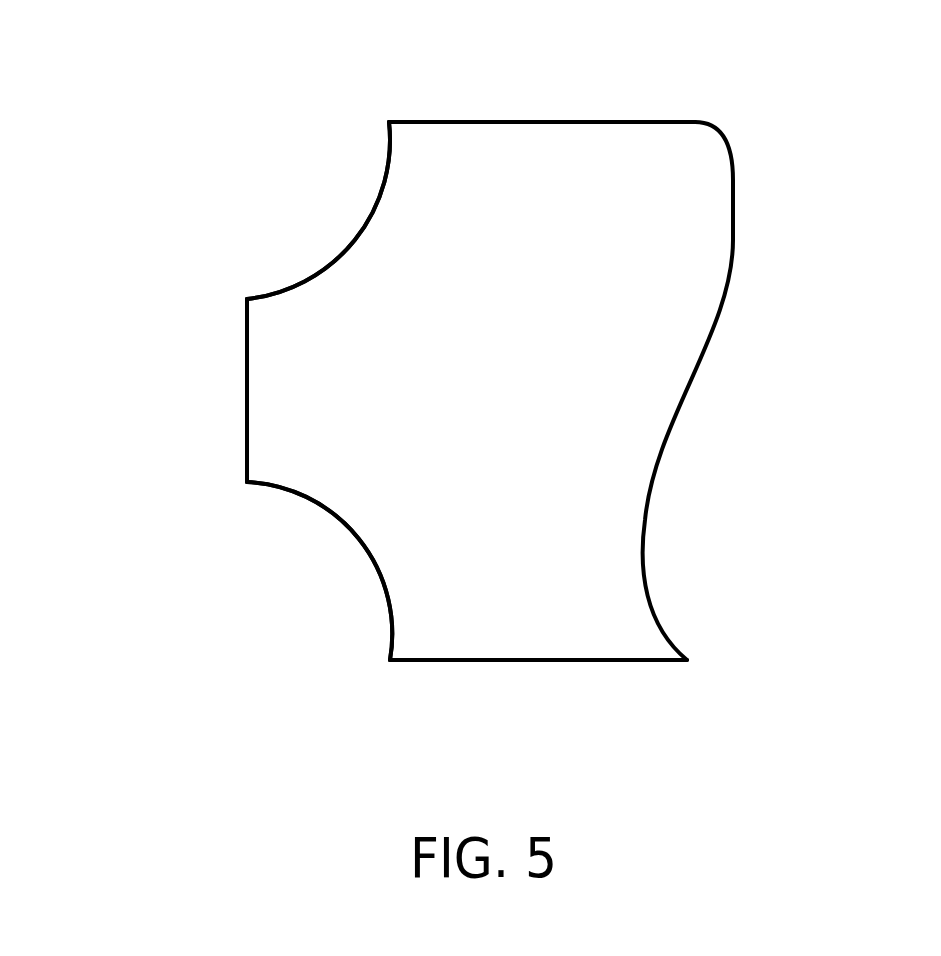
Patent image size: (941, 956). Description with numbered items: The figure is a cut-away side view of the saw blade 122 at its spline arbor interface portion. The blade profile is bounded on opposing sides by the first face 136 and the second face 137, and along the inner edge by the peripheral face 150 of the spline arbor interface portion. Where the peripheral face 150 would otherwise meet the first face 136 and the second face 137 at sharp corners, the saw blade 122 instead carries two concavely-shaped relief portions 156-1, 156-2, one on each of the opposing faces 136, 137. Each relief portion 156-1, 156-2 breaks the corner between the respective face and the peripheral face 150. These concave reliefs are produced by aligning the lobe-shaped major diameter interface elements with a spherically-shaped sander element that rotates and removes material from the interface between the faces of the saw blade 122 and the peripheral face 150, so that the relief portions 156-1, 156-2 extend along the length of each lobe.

The saw blade 122 is at (731, 253).
The first face 136 is at (557, 122).
The second face 137 is at (562, 660).
The peripheral face 150 is at (247, 410).
The concavely-shaped relief portion 156-1 is at (323, 244).
The concavely-shaped relief portion 156-2 is at (348, 560).